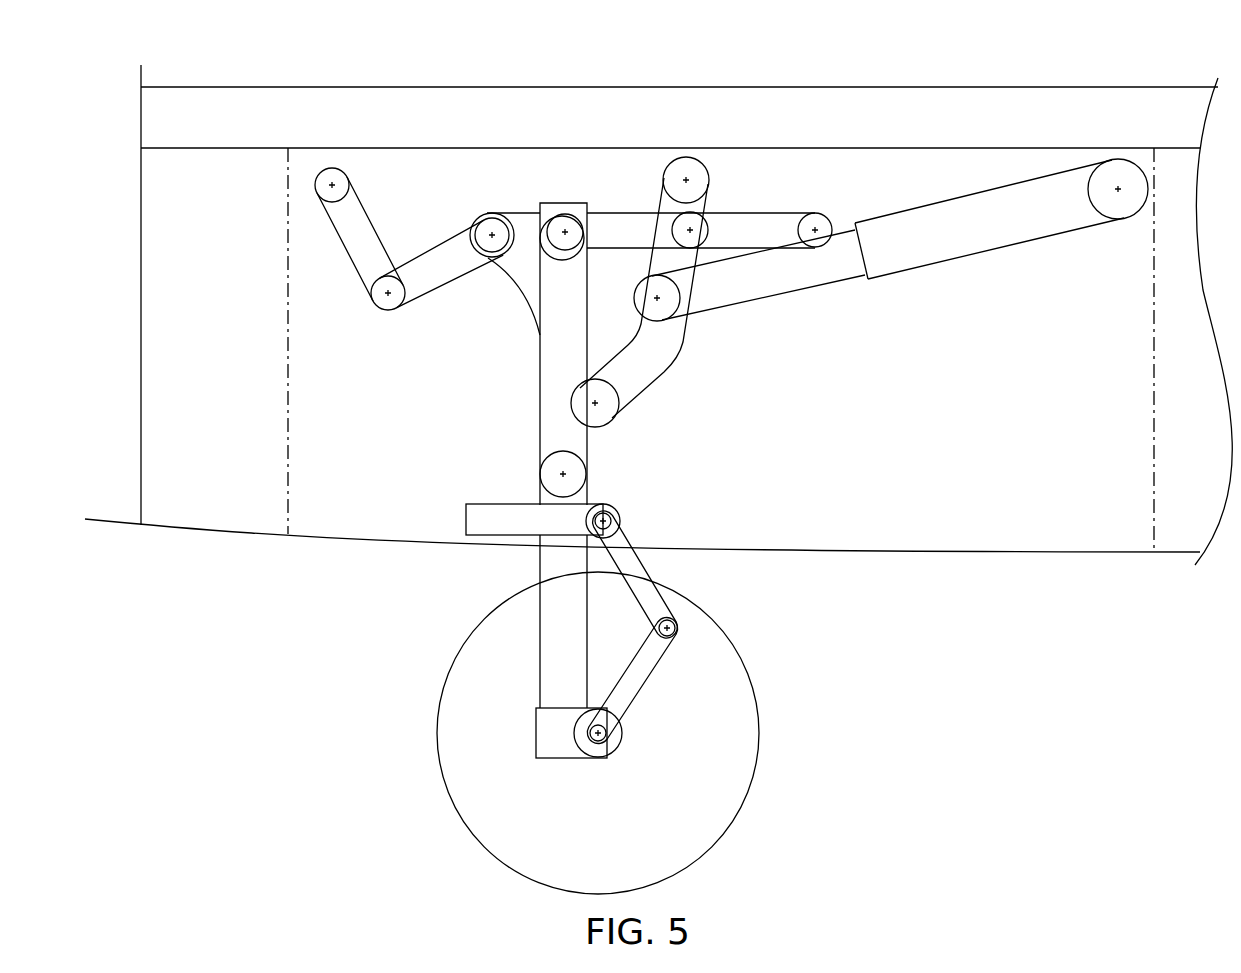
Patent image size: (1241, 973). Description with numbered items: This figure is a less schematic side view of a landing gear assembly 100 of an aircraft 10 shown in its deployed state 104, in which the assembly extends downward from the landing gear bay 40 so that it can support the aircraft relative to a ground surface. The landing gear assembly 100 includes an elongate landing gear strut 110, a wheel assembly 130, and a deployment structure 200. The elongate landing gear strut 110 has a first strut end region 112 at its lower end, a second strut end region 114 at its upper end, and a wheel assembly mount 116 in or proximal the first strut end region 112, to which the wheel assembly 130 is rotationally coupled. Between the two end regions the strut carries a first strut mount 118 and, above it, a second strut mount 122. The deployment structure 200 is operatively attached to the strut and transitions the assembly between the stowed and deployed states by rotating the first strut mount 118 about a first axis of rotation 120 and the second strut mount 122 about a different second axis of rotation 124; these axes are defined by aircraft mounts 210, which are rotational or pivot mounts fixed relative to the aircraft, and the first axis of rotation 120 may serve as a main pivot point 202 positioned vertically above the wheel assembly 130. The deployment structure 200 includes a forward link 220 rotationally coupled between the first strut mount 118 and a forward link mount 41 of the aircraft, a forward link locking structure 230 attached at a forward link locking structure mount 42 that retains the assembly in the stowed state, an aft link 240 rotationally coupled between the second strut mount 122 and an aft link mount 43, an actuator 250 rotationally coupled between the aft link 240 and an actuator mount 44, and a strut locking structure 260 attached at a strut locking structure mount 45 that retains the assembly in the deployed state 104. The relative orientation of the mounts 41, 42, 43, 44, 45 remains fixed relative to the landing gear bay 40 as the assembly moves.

The aircraft 10 is at (84, 72).
The landing gear bay 40 is at (138, 343).
The forward link mount 41 is at (582, 252).
The forward link locking structure mount 42 is at (322, 187).
The aft link mount 43 is at (672, 178).
The actuator mount 44 is at (1125, 178).
The strut locking structure mount 45 is at (822, 227).
The landing gear assembly 100 is at (783, 524).
The deployed state 104 is at (868, 722).
The elongate landing gear strut 110 is at (535, 562).
The first strut end region 112 is at (544, 766).
The second strut end region 114 is at (562, 201).
The wheel assembly mount 116 is at (622, 752).
The first strut mount 118 is at (577, 476).
The first axis of rotation 120 is at (559, 231).
The second strut mount 122 is at (603, 412).
The second axis of rotation 124 is at (682, 177).
The wheel assembly 130 is at (437, 709).
The deployment structure 200 is at (814, 399).
The main pivot point 202 is at (564, 223).
The aircraft mount 210 is at (326, 167).
The forward link 220 is at (537, 343).
The forward link locking structure 230 is at (347, 269).
The aft link 240 is at (674, 360).
The actuator 250 is at (968, 190).
The strut locking structure 260 is at (622, 210).